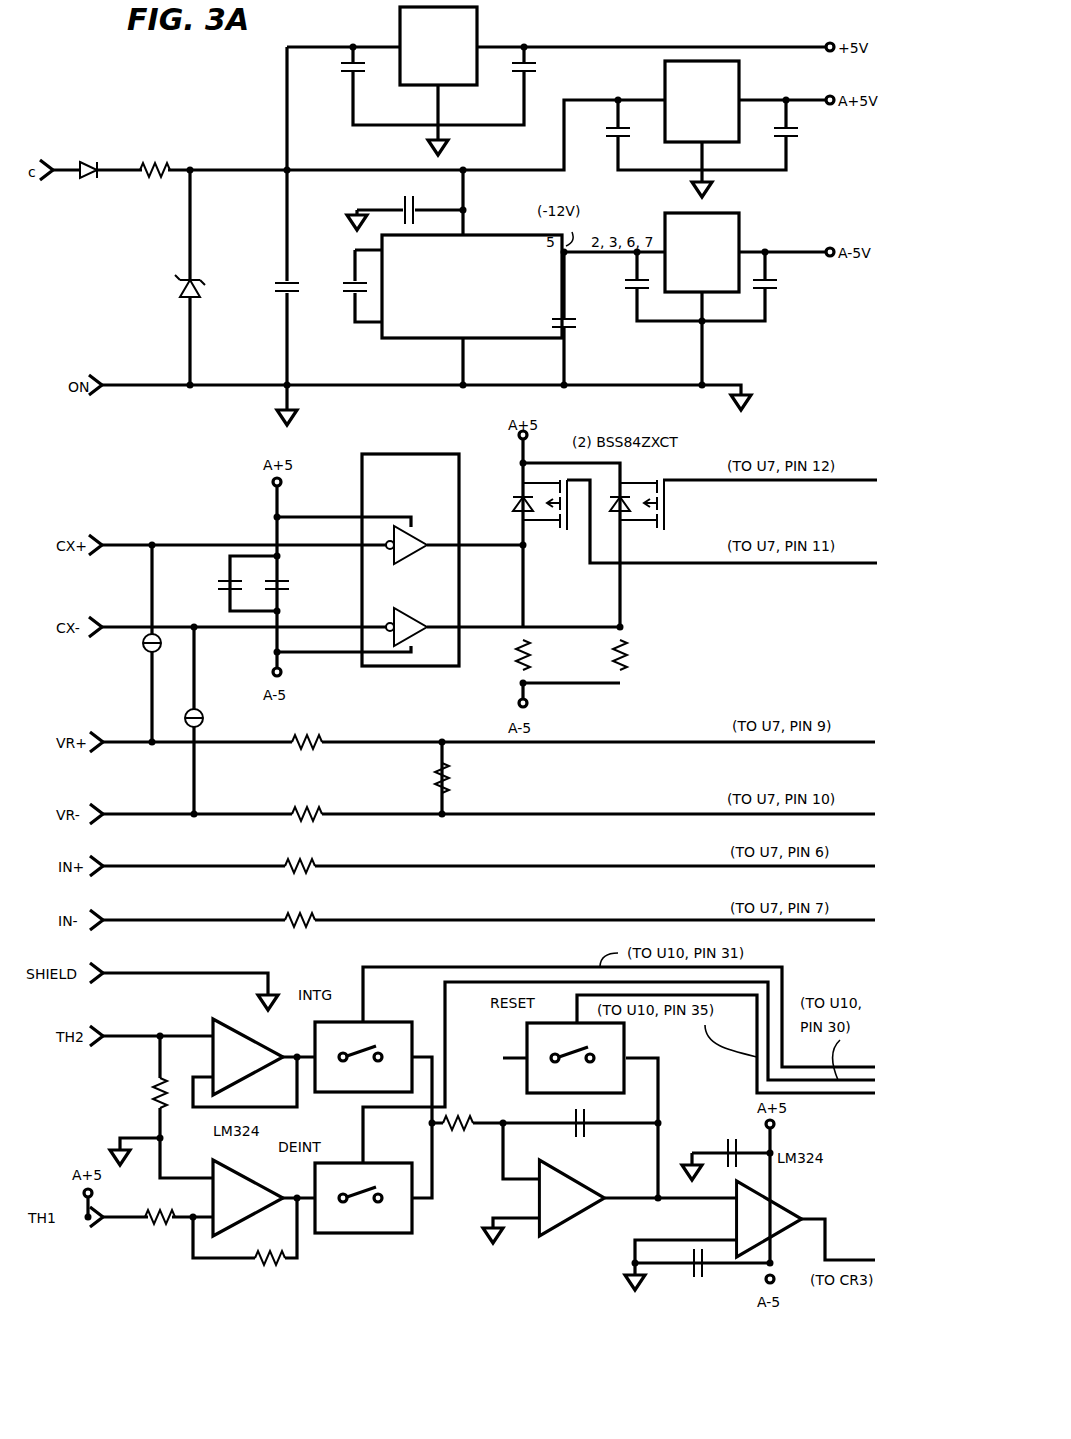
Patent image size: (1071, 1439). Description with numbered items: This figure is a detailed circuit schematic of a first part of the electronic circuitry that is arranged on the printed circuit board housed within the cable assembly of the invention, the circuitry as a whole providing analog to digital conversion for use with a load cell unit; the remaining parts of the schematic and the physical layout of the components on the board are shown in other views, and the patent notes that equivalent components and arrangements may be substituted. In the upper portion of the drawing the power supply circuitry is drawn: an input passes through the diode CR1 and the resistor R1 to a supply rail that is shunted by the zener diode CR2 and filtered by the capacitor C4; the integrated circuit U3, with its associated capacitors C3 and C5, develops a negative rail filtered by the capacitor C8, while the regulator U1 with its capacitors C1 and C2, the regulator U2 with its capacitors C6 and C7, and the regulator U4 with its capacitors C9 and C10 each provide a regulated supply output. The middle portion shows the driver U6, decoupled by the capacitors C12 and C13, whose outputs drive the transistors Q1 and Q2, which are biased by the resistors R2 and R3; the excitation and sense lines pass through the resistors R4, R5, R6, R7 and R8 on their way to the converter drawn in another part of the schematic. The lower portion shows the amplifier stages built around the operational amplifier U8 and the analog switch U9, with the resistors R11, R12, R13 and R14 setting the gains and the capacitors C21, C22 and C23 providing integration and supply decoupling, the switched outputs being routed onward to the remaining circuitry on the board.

The diode DL4002 CR1 is at (82, 172).
The resistor 4.7 ohm R1 is at (153, 180).
The zener diode DL4742 CR2 is at (156, 292).
The capacitor 100mf C4 is at (260, 292).
The capacitor 100mf C5 is at (335, 300).
The capacitor .1 C3 is at (408, 203).
The ICL7660S voltage converter U3 is at (466, 290).
The 78L05 regulator U1 is at (447, 57).
The capacitor .1 C1 is at (338, 78).
The capacitor .1 C2 is at (535, 78).
The 78L05 regulator U2 is at (708, 113).
The capacitor .1 C6 is at (603, 143).
The capacitor .1 C7 is at (801, 143).
The 78L05 regulator U4 is at (709, 264).
The capacitor .1 C9 is at (623, 295).
The capacitor .1 C10 is at (784, 295).
The capacitor 100mf C8 is at (600, 348).
The ICL7667 driver U6 is at (409, 560).
The capacitor .1 C12 is at (207, 596).
The capacitor 22mf C13 is at (297, 590).
The transistor BSS84ZXCT Q1 is at (635, 516).
The transistor BSS84ZXCT Q2 is at (539, 516).
The resistor 10K R2 is at (543, 656).
The resistor 10K R3 is at (640, 656).
The resistor 750 ohm R4 is at (307, 749).
The resistor 750 ohm R5 is at (326, 815).
The resistor 499 ohm R6 is at (465, 783).
The resistor 301 ohm R7 is at (284, 869).
The resistor 301 ohm R8 is at (284, 923).
The LM324 operational amplifier U8 is at (513, 1139).
The DG211 analog switch U9 is at (473, 1127).
The resistor 12.4K R11 is at (131, 1102).
The resistor 10K R12 is at (160, 1220).
The resistor 10K R13 is at (264, 1263).
The resistor 100K R14 is at (465, 1125).
The capacitor .39mf poly C21 is at (586, 1134).
The capacitor .1 C22 is at (715, 1142).
The capacitor .1 C23 is at (697, 1279).